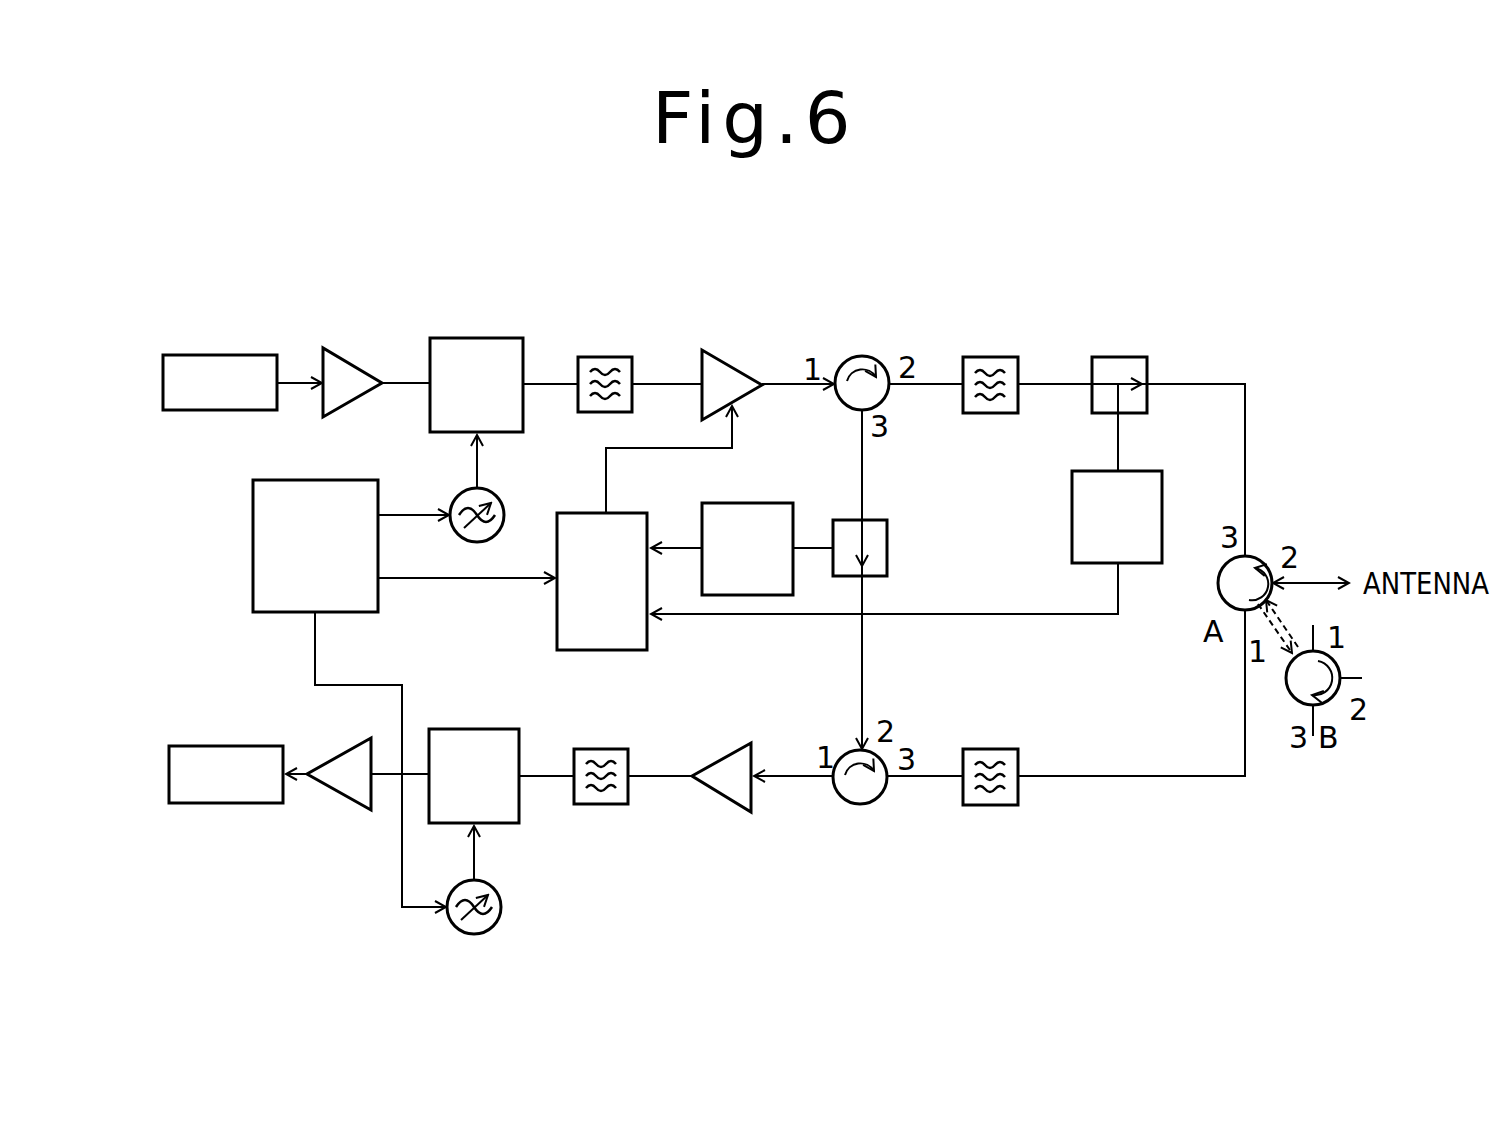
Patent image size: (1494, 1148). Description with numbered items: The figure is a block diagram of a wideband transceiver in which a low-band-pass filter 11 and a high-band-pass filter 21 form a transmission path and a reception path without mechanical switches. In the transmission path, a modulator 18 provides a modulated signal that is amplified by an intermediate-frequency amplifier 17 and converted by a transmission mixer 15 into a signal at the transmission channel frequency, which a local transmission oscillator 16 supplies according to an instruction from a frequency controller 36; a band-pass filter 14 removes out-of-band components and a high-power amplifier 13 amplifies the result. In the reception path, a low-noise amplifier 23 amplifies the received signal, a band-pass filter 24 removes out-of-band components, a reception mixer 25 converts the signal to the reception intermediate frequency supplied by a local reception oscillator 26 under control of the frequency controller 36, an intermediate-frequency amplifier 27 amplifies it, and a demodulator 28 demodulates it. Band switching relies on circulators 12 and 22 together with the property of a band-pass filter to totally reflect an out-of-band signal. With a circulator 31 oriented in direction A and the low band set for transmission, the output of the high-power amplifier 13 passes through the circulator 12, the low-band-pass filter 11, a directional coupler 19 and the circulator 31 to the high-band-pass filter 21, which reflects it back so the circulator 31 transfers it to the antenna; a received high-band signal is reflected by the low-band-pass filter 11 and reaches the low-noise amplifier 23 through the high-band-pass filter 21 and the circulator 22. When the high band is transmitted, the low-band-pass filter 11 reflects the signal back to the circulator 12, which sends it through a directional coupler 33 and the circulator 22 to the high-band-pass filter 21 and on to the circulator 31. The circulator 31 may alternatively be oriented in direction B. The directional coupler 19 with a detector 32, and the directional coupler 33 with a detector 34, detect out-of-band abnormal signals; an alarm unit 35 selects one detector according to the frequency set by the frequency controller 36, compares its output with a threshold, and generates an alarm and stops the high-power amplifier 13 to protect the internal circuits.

The low-band-pass filter 11 is at (1000, 357).
The circulator 12 is at (878, 360).
The high-power amplifier 13 is at (748, 372).
The band-pass filter 14 is at (620, 357).
The transmission mixer 15 is at (495, 338).
The local transmission oscillator 16 is at (501, 497).
The intermediate-frequency amplifier 17 is at (362, 368).
The modulator 18 is at (257, 355).
The directional coupler 19 is at (1128, 357).
The high-band-pass filter 21 is at (1015, 749).
The circulator 22 is at (855, 750).
The low-noise amplifier 23 is at (752, 743).
The band-pass filter 24 is at (620, 749).
The reception mixer 25 is at (505, 729).
The local reception oscillator 26 is at (503, 907).
The intermediate-frequency amplifier 27 is at (338, 760).
The demodulator 28 is at (263, 746).
The circulator 31 is at (1265, 556).
The detector 32 is at (1163, 497).
The directional coupler 33 is at (887, 548).
The detector 34 is at (778, 503).
The alarm unit 35 is at (630, 513).
The frequency controller 36 is at (360, 480).